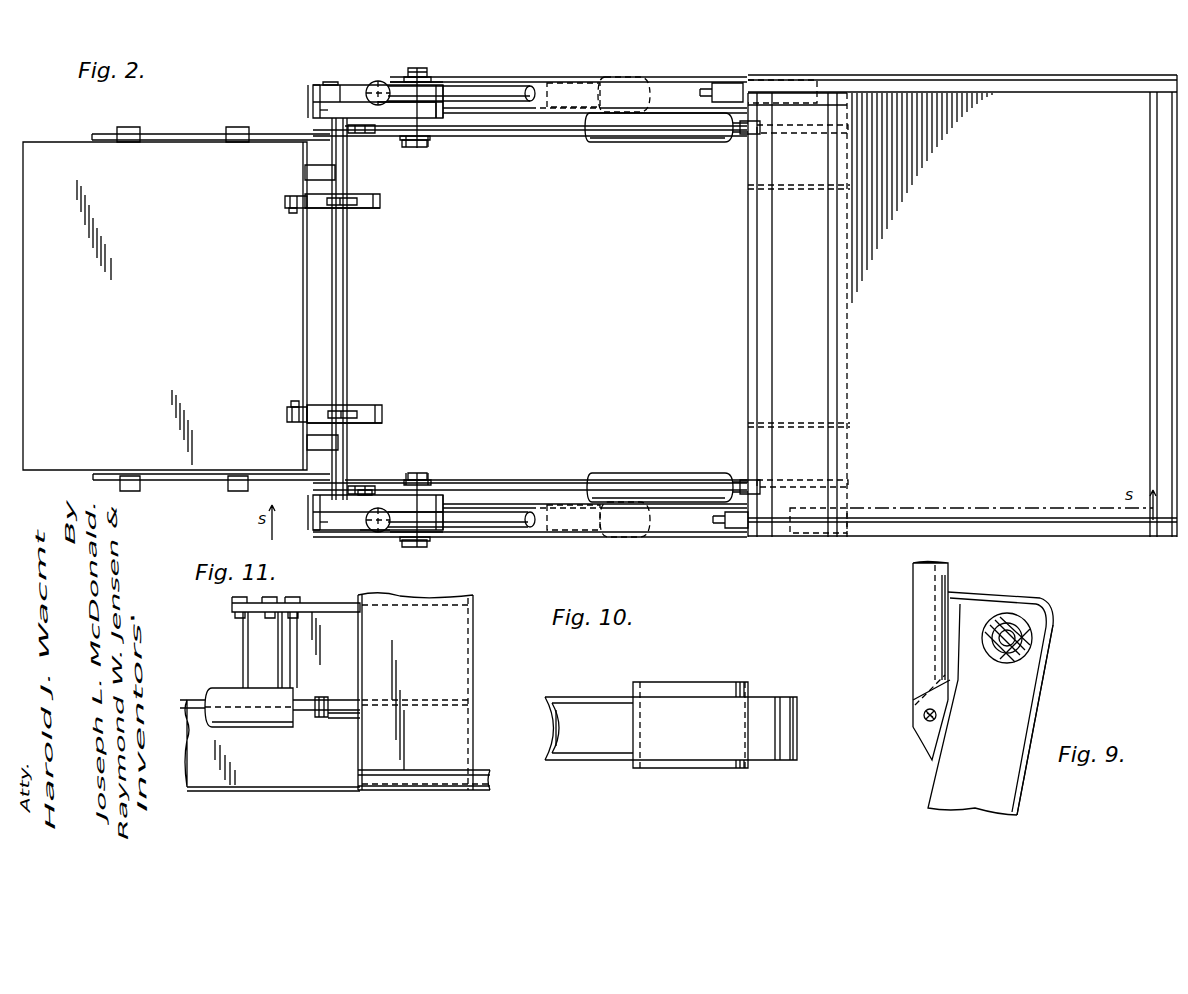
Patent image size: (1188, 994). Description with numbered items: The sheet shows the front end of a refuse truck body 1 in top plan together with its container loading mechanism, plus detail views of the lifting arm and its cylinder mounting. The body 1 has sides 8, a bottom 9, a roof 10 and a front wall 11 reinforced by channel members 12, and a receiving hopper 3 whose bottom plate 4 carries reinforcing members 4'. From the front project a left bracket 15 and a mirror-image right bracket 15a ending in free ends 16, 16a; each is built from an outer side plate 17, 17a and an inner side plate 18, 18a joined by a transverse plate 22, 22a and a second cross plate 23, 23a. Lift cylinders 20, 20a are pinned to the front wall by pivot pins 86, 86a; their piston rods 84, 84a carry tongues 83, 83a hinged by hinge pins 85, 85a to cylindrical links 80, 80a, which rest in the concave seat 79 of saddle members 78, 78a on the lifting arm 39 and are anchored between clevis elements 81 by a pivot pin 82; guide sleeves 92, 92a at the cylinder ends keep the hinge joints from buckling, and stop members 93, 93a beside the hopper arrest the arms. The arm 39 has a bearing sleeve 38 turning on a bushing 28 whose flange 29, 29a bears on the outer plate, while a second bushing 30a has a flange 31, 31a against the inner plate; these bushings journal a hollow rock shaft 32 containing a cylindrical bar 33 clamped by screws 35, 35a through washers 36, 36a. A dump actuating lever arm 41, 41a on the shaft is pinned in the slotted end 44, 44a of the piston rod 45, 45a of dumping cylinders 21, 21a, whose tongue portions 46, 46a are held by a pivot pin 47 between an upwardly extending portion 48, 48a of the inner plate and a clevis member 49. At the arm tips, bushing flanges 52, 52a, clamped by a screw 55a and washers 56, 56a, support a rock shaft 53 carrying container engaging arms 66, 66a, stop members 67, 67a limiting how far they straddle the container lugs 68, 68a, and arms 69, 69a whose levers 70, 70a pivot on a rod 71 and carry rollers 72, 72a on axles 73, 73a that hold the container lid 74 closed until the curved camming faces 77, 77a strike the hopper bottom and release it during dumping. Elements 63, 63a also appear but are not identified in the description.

In FIG. 2, the body 1 is at (1085, 534).
In FIG. 2, the receiving hopper 3 is at (1020, 508).
In FIG. 2, the hopper bottom plate 4 is at (854, 315).
In FIG. 11, the hopper bottom plate 4 is at (428, 691).
In FIG. 2, the reinforcing members 4' is at (797, 315).
In FIG. 2, the sides 8 is at (1090, 94).
In FIG. 11, the sides 8 is at (478, 772).
In FIG. 2, the bottom 9 is at (925, 271).
In FIG. 2, the roof 10 is at (1150, 408).
In FIG. 2, the front wall 11 is at (850, 368).
In FIG. 11, the front wall 11 is at (475, 640).
In FIG. 2, the channel members 12 is at (978, 75).
In FIG. 11, the channel members 12 is at (488, 788).
In FIG. 2, the first bracket structure 15 is at (695, 537).
In FIG. 11, the first bracket structure 15 is at (302, 790).
In FIG. 2, the bracket 15a is at (562, 77).
In FIG. 2, the free end 16 is at (412, 540).
In FIG. 2, the free end 16a is at (414, 70).
In FIG. 2, the outer side plate 17 is at (508, 537).
In FIG. 11, the outer side plate 17 is at (245, 790).
In FIG. 2, the outer side plate 17a is at (695, 80).
In FIG. 2, the inner side plate 18 is at (810, 480).
In FIG. 11, the inner side plate 18 is at (195, 700).
In FIG. 2, the inner side plate 18a is at (798, 128).
In FIG. 2, the lift cylinder 20 is at (655, 537).
In FIG. 2, the lift cylinder 20a is at (640, 77).
In FIG. 2, the dumping cylinder 21 is at (620, 480).
In FIG. 11, the dumping cylinder 21 is at (270, 727).
In FIG. 2, the dumping cylinder 21a is at (622, 143).
In FIG. 2, the transverse plate 22 is at (492, 505).
In FIG. 2, the transverse plate 22a is at (490, 115).
In FIG. 2, the second cross plate 23 is at (568, 505).
In FIG. 11, the second cross plate 23 is at (210, 775).
In FIG. 2, the second cross plate 23a is at (580, 92).
In FIG. 9, the bushing 28 is at (992, 655).
In FIG. 2, the flange 29 is at (440, 535).
In FIG. 2, the flange 29a is at (440, 84).
In FIG. 2, the bushing 30a is at (352, 85).
In FIG. 2, the flange 31 is at (410, 478).
In FIG. 2, the flange 31a is at (420, 138).
In FIG. 9, the rock shaft 32 is at (1025, 650).
In FIG. 9, the cylindrical bar 33 is at (1015, 637).
In FIG. 2, the screws 35 is at (432, 468).
In FIG. 2, the screws 35a is at (420, 70).
In FIG. 2, the washers 36 is at (432, 478).
In FIG. 2, the washers 36a is at (428, 76).
In FIG. 10, the bearing sleeve 38 is at (750, 684).
In FIG. 9, the bearing sleeve 38 is at (1018, 660).
In FIG. 2, the lifting arm 39 is at (372, 531).
In FIG. 10, the lifting arm 39 is at (775, 760).
In FIG. 9, the lifting arm 39 is at (1040, 705).
In FIG. 2, the dump actuating lever arm 41 is at (345, 489).
In FIG. 2, the dump actuating lever arm 41a is at (345, 128).
In FIG. 2, the slotted end 44 is at (348, 480).
In FIG. 2, the slotted end 44a is at (345, 140).
In FIG. 2, the piston rod 45 is at (532, 483).
In FIG. 2, the piston rod 45a is at (578, 137).
In FIG. 2, the tongue portion 46 is at (722, 480).
In FIG. 11, the tongue portion 46 is at (292, 730).
In FIG. 2, the tongue portion 46a is at (722, 140).
In FIG. 11, the pivot pin 47 is at (305, 712).
In FIG. 2, the upwardly extending portion 48 is at (745, 480).
In FIG. 11, the upwardly extending portion 48 is at (340, 697).
In FIG. 2, the upwardly extending portion 48a is at (740, 135).
In FIG. 2, the clevis member 49 is at (775, 125).
In FIG. 11, the clevis member 49 is at (352, 715).
In FIG. 2, the flange 52 is at (313, 528).
In FIG. 2, the flange 52a is at (313, 88).
In FIG. 2, the rock shaft 53 is at (348, 300).
In FIG. 2, the screw 55a is at (330, 82).
In FIG. 2, the washer 56 is at (352, 534).
In FIG. 2, the washer 56a is at (320, 85).
In FIG. 2, the housing 63 is at (447, 505).
In FIG. 2, the housing 63a is at (447, 109).
In FIG. 2, the container engaging arm 66 is at (215, 476).
In FIG. 2, the container engaging arm 66a is at (183, 140).
In FIG. 2, the stop member 67 is at (307, 440).
In FIG. 2, the stop member 67a is at (305, 172).
In FIG. 2, the lug elements 68 is at (128, 476).
In FIG. 2, the lug elements 68a is at (122, 127).
In FIG. 2, the arm 69 is at (340, 412).
In FIG. 2, the arm 69a is at (345, 207).
In FIG. 2, the lever 70 is at (316, 405).
In FIG. 2, the lever 70a is at (315, 210).
In FIG. 2, the rod 71 is at (343, 345).
In FIG. 2, the roller 72 is at (287, 413).
In FIG. 2, the roller 72a is at (285, 202).
In FIG. 2, the axle 73 is at (295, 405).
In FIG. 2, the axle 73a is at (290, 213).
In FIG. 2, the lid 74 is at (172, 475).
In FIG. 2, the camming face 77 is at (385, 412).
In FIG. 2, the camming face 77a is at (382, 203).
In FIG. 2, the saddle member 78 is at (391, 515).
In FIG. 10, the saddle member 78 is at (578, 697).
In FIG. 9, the saddle member 78 is at (965, 593).
In FIG. 2, the saddle member 78a is at (378, 81).
In FIG. 10, the concave seat 79 is at (550, 733).
In FIG. 9, the concave seat 79 is at (940, 633).
In FIG. 2, the link 80 is at (368, 515).
In FIG. 9, the link 80 is at (913, 600).
In FIG. 2, the link 80a is at (407, 111).
In FIG. 9, the clevis elements 81 is at (920, 742).
In FIG. 9, the pivot pin 82 is at (924, 716).
In FIG. 2, the tongue 83 is at (332, 525).
In FIG. 2, the tongue 83a is at (378, 101).
In FIG. 2, the piston rod 84 is at (510, 528).
In FIG. 2, the piston rod 84a is at (515, 86).
In FIG. 2, the hinge pin 85 is at (375, 495).
In FIG. 2, the hinge pin 85a is at (336, 112).
In FIG. 2, the pivot pin 86 is at (828, 533).
In FIG. 2, the pivot pin 86a is at (840, 78).
In FIG. 2, the guide sleeve 92 is at (533, 527).
In FIG. 2, the guide sleeve 92a is at (533, 103).
In FIG. 2, the stop member 93 is at (730, 528).
In FIG. 2, the stop member 93a is at (728, 85).